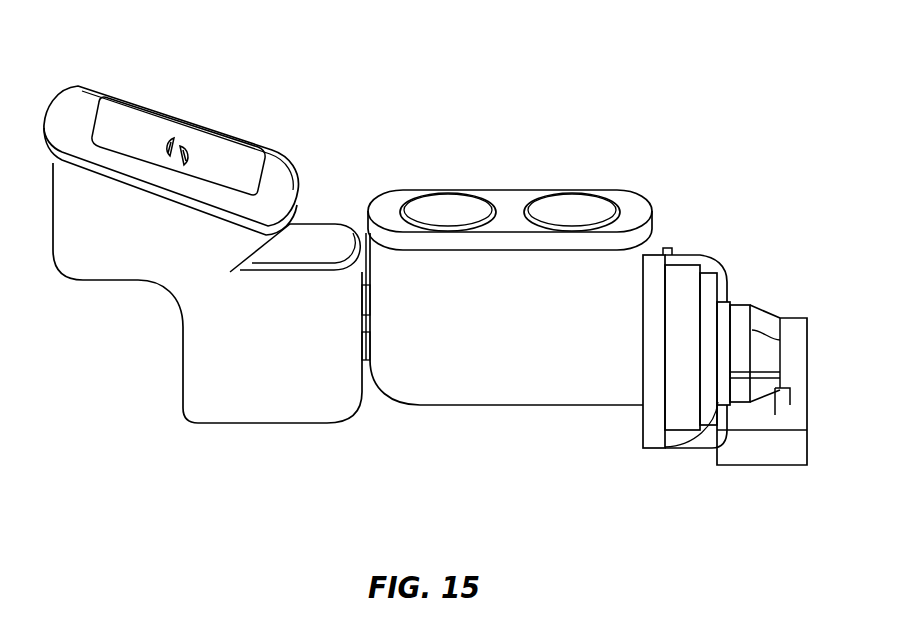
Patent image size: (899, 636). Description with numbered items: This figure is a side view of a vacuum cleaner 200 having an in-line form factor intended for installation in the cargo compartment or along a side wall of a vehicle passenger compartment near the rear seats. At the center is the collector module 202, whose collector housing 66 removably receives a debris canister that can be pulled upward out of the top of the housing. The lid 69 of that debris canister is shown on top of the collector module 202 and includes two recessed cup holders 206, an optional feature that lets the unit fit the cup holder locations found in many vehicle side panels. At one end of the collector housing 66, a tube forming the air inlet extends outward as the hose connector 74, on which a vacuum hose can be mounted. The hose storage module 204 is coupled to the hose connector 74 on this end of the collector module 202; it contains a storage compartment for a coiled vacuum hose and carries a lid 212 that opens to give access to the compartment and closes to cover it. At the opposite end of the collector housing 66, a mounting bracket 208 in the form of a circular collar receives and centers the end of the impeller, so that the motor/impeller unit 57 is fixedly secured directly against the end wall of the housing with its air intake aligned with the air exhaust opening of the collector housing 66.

The vacuum cleaner 200 is at (700, 84).
The lid 212 is at (117, 118).
The hose storage module 204 is at (183, 425).
The collector module 202 is at (500, 412).
The lid 69 is at (523, 200).
The recessed cup holders 206 is at (445, 210).
The hose connector 74 is at (366, 385).
The collector housing 66 is at (543, 390).
The mounting bracket 208 is at (653, 412).
The motor/impeller unit 57 is at (765, 300).